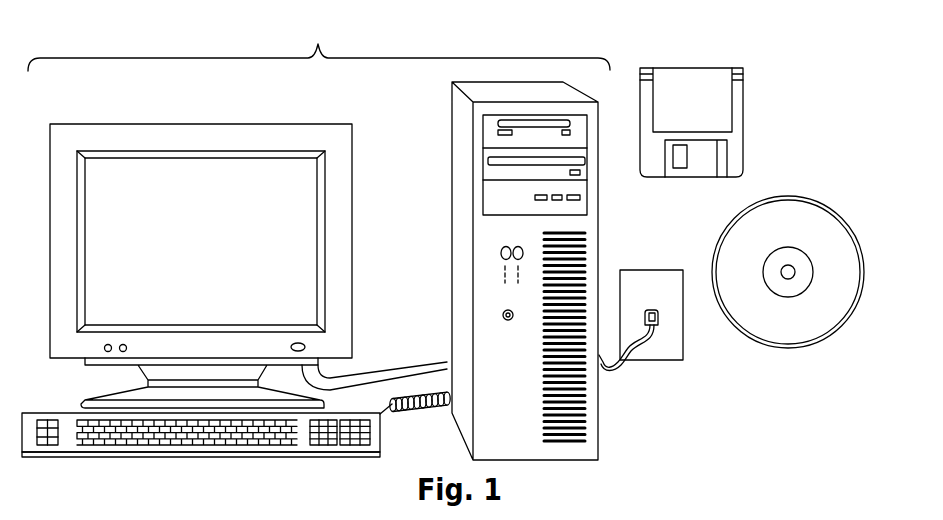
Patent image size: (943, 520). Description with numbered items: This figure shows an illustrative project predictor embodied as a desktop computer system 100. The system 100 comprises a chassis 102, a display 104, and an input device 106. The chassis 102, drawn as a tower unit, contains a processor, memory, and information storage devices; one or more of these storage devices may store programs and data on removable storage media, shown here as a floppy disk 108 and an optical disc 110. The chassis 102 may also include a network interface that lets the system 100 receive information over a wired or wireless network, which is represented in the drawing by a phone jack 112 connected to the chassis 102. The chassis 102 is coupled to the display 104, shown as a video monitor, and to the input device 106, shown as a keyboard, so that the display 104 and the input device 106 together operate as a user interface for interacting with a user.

The system 100 is at (319, 46).
The chassis 102 is at (452, 310).
The display 104 is at (72, 360).
The input device 106 is at (64, 457).
The floppy disk 108 is at (745, 151).
The optical disc 110 is at (800, 199).
The phone jack 112 is at (643, 270).